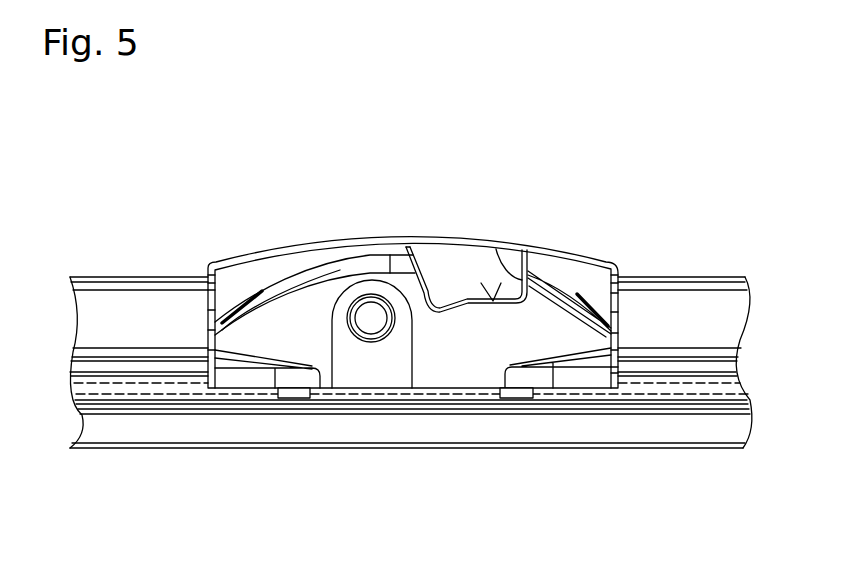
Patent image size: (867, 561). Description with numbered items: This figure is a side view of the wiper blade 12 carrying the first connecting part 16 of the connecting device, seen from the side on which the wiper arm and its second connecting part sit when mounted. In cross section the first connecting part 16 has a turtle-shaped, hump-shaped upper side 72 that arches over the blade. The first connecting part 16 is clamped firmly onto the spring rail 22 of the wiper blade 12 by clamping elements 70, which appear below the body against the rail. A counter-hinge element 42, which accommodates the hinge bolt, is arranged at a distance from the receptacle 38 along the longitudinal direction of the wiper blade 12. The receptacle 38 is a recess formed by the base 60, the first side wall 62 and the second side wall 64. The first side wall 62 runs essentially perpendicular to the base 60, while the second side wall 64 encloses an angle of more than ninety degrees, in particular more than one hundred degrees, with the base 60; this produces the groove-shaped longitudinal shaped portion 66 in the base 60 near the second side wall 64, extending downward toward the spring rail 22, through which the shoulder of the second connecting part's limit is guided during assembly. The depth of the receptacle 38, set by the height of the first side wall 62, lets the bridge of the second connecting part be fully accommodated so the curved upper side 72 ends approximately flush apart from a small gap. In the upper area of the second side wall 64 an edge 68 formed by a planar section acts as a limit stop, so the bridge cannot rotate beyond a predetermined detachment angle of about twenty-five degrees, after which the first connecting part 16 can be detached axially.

The wiper blade 12 is at (688, 262).
The first connecting part 16 is at (418, 168).
The spring rail 22 is at (733, 384).
The receptacle 38 is at (490, 262).
The counter-hinge element 42 is at (371, 328).
The base 60 is at (481, 283).
The first side wall 62 is at (503, 288).
The second side wall 64 is at (445, 290).
The longitudinal shaped portion 66 is at (443, 307).
The edge 68 is at (408, 251).
The clamping elements 70 is at (287, 398).
The upper side 72 is at (332, 256).